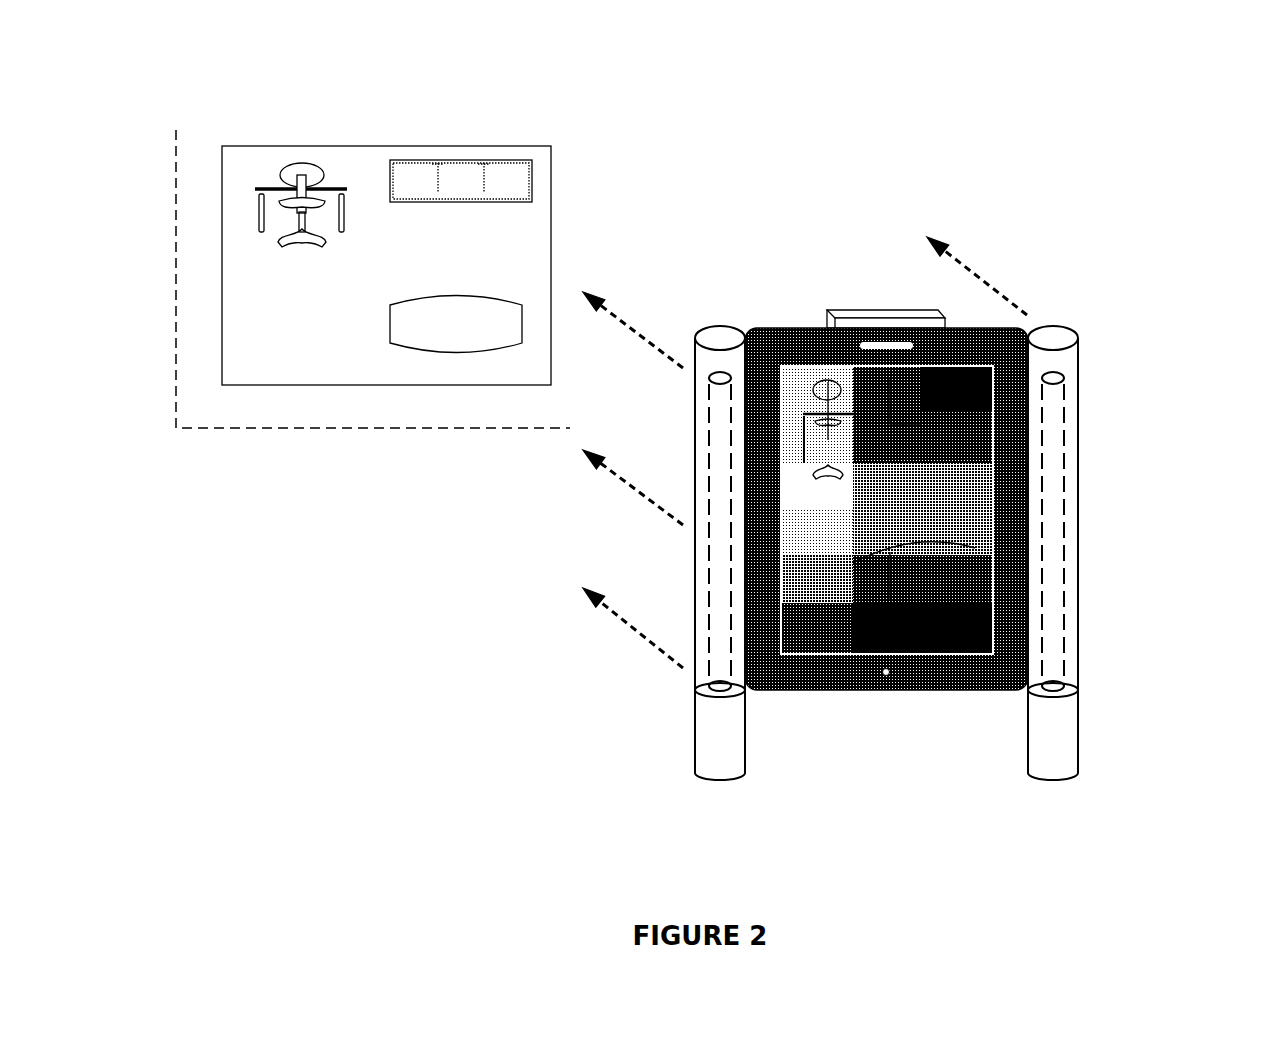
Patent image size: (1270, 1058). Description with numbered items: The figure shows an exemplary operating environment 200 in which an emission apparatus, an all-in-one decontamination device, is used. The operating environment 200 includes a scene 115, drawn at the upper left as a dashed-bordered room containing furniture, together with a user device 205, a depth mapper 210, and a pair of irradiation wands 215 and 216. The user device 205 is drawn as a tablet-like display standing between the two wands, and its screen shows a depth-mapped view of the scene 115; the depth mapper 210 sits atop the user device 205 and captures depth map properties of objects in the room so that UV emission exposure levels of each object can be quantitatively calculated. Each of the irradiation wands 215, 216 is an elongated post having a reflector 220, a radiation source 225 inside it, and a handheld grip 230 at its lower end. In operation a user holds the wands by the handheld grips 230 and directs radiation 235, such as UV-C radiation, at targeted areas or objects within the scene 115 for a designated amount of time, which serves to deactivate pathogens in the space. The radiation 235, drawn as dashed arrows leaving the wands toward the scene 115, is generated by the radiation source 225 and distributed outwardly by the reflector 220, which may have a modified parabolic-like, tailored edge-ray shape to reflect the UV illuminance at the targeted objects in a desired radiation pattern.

The operating environment 200 is at (156, 89).
The scene 115 is at (373, 279).
The user device 205 is at (880, 692).
The depth mapper 210 is at (878, 308).
The irradiation wand 215 is at (718, 784).
The irradiation wand 216 is at (1052, 784).
The reflector 220 is at (1078, 407).
The radiation source 225 is at (1065, 545).
The handheld grip 230 is at (1073, 731).
The radiation 235 is at (661, 318).